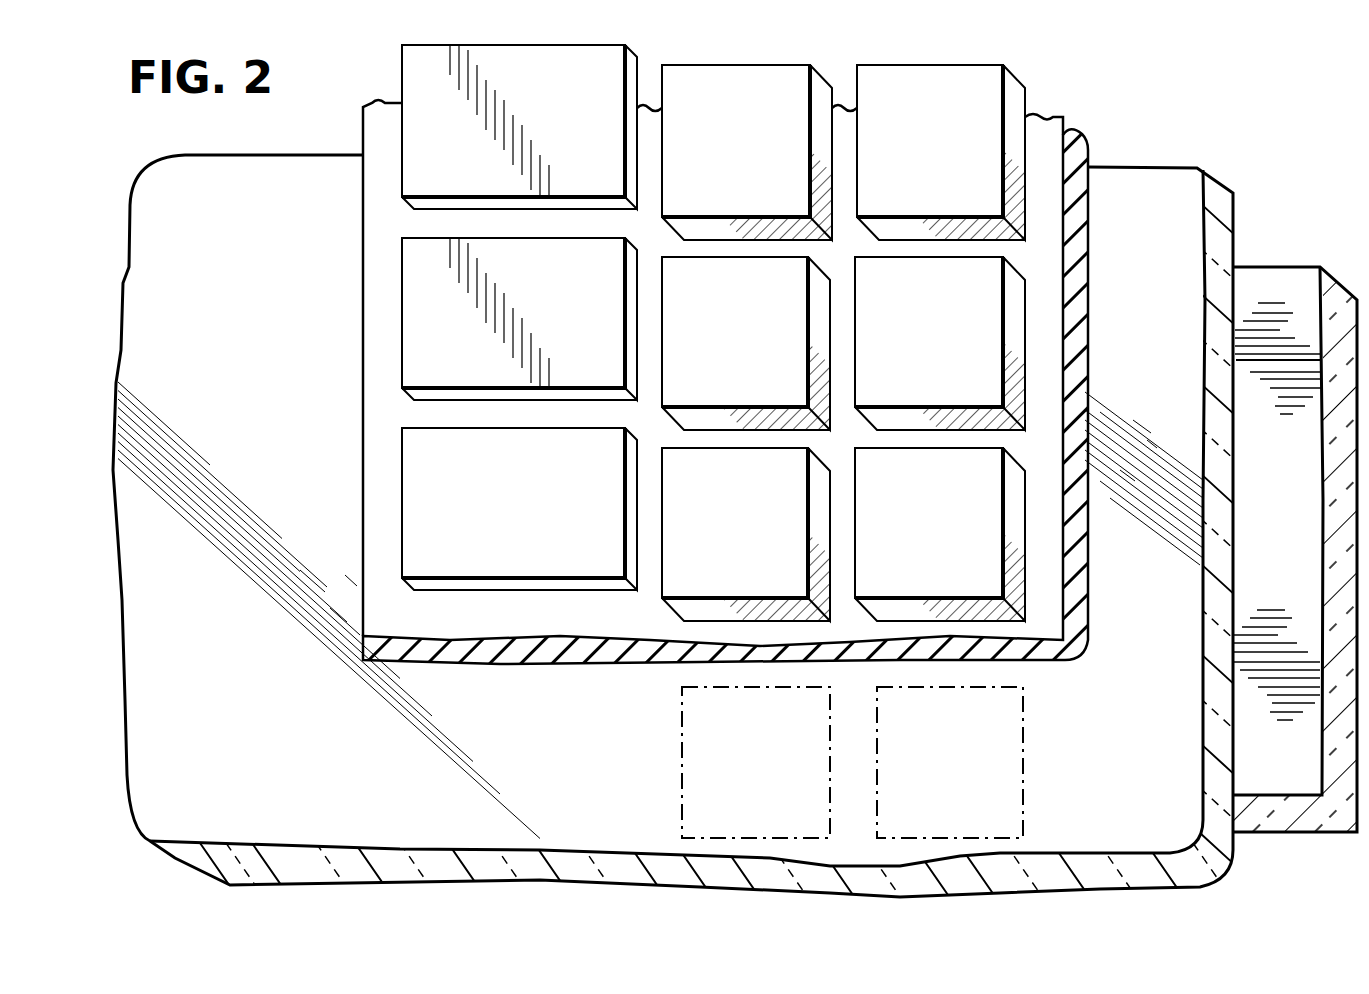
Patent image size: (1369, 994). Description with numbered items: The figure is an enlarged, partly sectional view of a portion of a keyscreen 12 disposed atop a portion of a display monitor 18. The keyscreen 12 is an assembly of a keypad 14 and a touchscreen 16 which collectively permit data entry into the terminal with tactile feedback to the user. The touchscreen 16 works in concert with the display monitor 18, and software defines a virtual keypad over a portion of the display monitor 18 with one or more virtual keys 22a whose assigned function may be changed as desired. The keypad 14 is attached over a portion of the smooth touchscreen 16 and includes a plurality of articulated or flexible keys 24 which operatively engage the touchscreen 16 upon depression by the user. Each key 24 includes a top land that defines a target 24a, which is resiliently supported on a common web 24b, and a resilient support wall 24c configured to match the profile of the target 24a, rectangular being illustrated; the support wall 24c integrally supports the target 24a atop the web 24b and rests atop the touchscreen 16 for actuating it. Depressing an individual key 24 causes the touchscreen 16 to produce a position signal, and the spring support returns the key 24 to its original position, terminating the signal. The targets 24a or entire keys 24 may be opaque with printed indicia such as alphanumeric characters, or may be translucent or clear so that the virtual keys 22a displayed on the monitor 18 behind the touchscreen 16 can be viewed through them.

The keyscreen 12 is at (1288, 112).
The keypad 14 is at (352, 402).
The touchscreen 16 is at (1170, 185).
The display monitor 18 is at (1280, 282).
The virtual key 22a is at (682, 728).
The key 24 is at (655, 607).
The target 24a is at (886, 78).
The web 24b is at (1050, 132).
The support wall 24c is at (1013, 76).